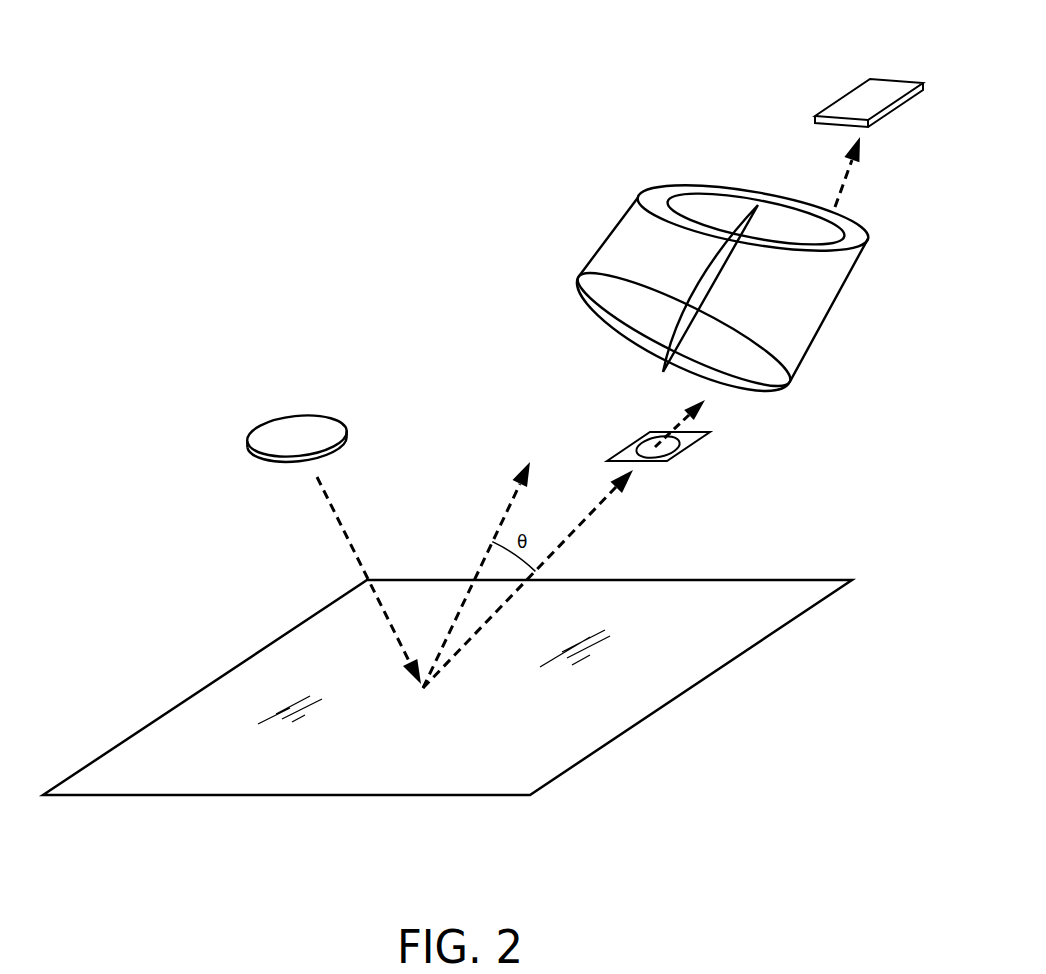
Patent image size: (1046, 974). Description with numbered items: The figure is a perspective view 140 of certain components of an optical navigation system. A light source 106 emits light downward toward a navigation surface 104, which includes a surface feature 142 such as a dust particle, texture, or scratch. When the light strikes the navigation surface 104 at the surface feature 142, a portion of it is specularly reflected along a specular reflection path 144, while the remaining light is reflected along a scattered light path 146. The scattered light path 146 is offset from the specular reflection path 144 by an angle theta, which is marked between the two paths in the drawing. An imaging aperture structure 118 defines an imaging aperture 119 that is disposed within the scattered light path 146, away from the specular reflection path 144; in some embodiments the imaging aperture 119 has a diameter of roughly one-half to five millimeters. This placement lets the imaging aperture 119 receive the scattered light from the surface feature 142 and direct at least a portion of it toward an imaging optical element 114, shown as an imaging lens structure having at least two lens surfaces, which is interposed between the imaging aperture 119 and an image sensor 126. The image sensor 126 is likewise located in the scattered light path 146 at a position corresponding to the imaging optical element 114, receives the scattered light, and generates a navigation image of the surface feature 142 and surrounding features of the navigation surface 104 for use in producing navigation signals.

The navigation surface 104 is at (188, 710).
The light source 106 is at (267, 435).
The imaging optical element 114 is at (612, 232).
The imaging aperture structure 118 is at (697, 440).
The imaging aperture 119 is at (648, 443).
The image sensor 126 is at (845, 103).
The perspective view 140 is at (318, 260).
The surface feature 142 is at (423, 690).
The specular reflection path 144 is at (508, 505).
The scattered light path 146 is at (590, 518).